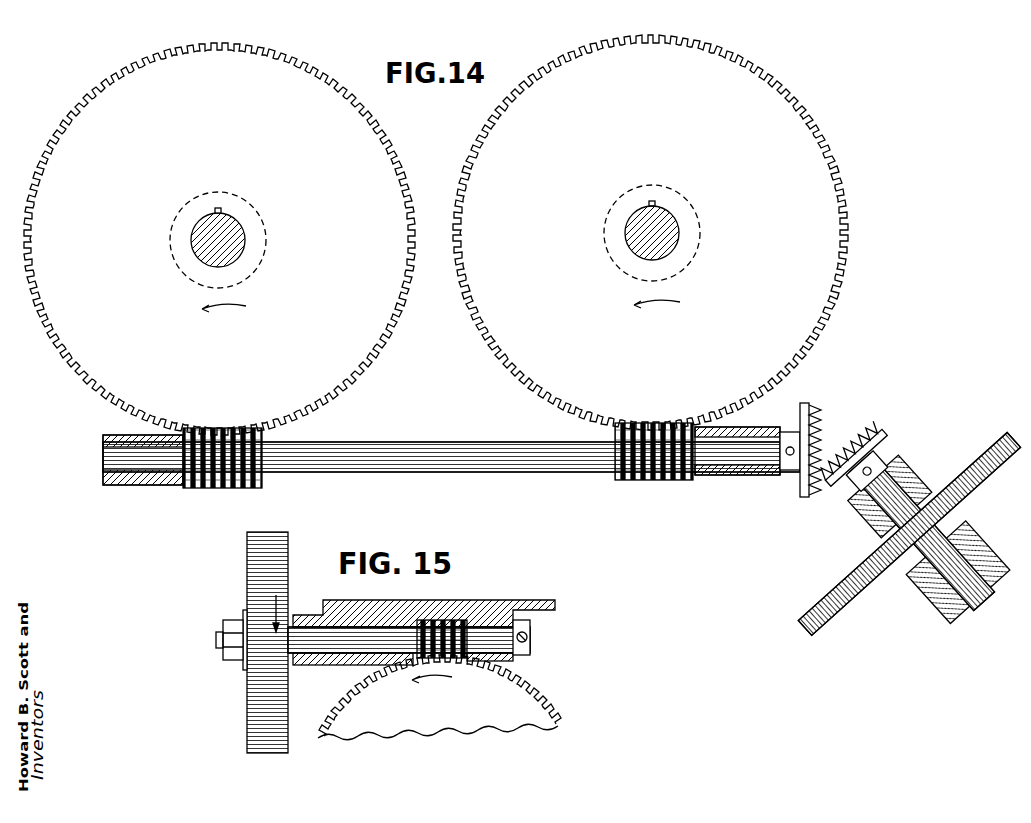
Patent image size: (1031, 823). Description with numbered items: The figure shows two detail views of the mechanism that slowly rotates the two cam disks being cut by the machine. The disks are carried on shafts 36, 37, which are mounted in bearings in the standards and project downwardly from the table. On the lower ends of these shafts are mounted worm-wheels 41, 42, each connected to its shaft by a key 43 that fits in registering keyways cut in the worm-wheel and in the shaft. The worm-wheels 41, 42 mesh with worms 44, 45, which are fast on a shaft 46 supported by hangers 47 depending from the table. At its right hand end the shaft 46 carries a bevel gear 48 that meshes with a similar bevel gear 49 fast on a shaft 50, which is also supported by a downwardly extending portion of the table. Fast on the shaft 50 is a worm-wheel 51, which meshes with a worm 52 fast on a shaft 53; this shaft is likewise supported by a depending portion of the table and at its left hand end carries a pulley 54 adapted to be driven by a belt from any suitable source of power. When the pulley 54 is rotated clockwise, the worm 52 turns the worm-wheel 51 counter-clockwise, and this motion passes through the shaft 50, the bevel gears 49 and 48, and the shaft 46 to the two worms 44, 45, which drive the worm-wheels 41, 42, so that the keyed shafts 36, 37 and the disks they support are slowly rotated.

In FIG. 14, the shaft 36 is at (686, 233).
In FIG. 14, the shaft 37 is at (246, 238).
In FIG. 14, the worm-wheel 41 is at (840, 268).
In FIG. 14, the worm-wheel 42 is at (392, 326).
In FIG. 14, the key 43 is at (230, 205).
In FIG. 14, the worm 44 is at (630, 482).
In FIG. 14, the worm 45 is at (213, 490).
In FIG. 14, the shaft 46 is at (406, 480).
In FIG. 14, the hanger 47 is at (152, 484).
In FIG. 14, the bevel gear 48 is at (810, 405).
In FIG. 14, the bevel gear 49 is at (876, 432).
In FIG. 14, the shaft 50 is at (942, 604).
In FIG. 14, the worm-wheel 51 is at (850, 603).
In FIG. 15, the worm-wheel 51 is at (537, 721).
In FIG. 15, the worm 52 is at (448, 620).
In FIG. 15, the shaft 53 is at (350, 620).
In FIG. 15, the pulley 54 is at (247, 708).